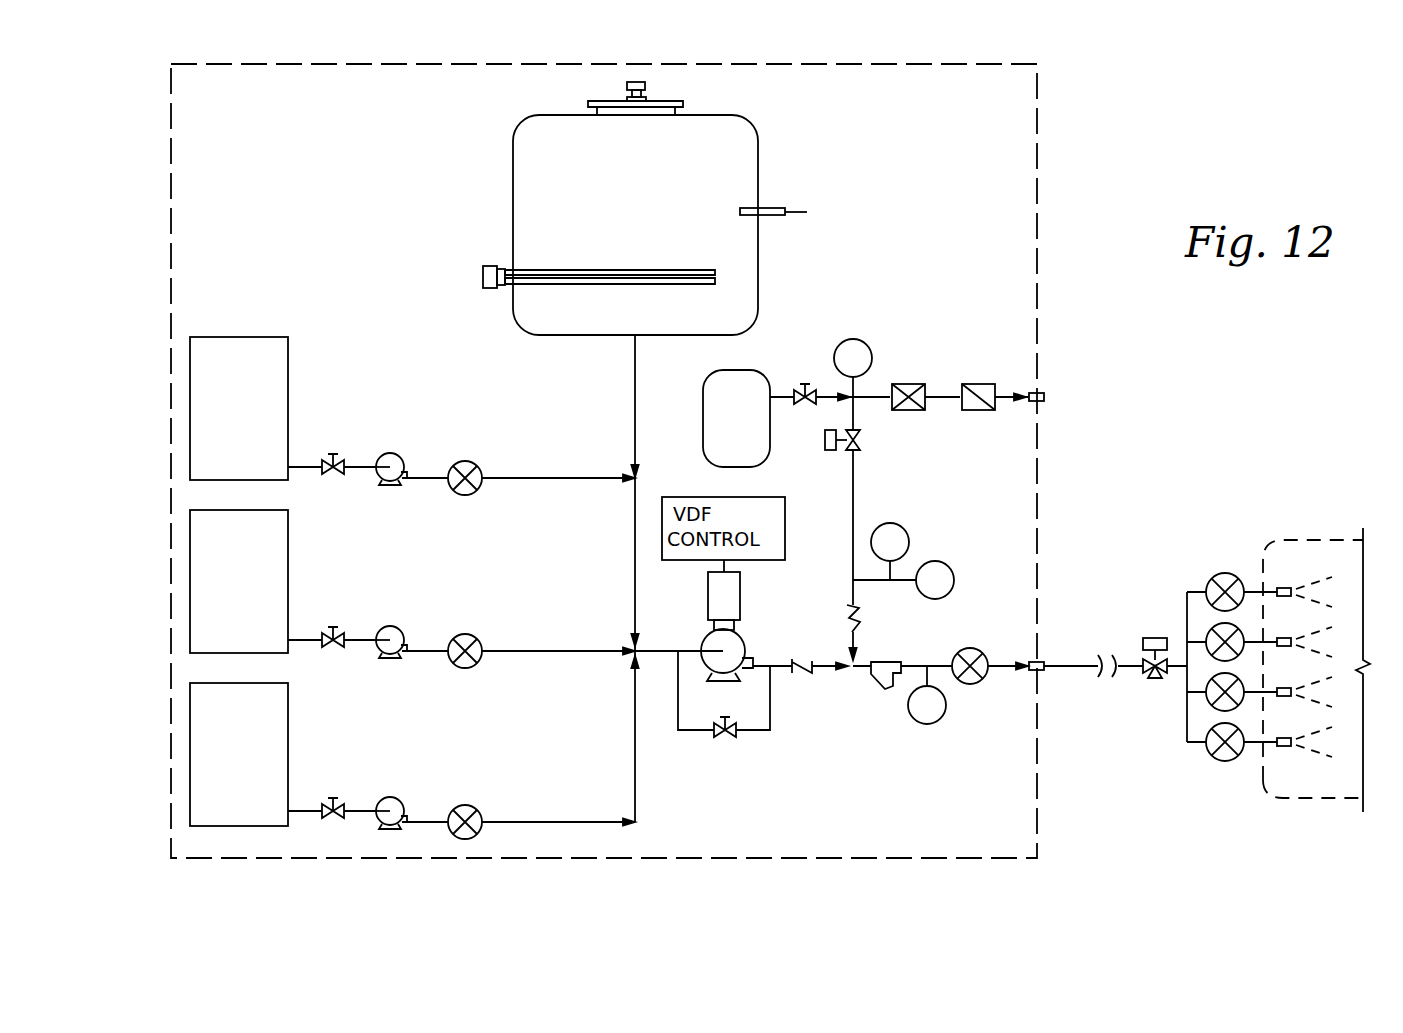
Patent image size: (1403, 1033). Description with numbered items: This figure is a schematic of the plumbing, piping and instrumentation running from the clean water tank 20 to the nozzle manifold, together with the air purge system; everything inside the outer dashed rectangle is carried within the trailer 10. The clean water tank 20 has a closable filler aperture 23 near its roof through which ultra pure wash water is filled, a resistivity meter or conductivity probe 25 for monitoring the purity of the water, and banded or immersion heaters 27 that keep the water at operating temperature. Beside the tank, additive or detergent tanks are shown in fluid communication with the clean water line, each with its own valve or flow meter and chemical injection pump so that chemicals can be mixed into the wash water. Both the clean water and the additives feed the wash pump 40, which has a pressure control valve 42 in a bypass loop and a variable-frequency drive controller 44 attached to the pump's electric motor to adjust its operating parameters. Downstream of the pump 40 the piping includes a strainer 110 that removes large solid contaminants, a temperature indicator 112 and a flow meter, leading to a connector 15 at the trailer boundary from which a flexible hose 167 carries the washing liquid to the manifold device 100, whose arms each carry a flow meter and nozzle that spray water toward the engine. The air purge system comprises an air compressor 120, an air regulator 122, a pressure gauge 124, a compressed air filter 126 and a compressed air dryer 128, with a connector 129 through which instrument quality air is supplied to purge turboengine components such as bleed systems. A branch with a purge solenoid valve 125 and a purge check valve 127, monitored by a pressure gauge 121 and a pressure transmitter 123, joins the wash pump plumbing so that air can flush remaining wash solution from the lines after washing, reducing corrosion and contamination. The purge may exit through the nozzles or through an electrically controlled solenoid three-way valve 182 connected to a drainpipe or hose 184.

The trailer 10 is at (1037, 177).
The connector 15 is at (1043, 662).
The clean water tank 20 is at (513, 189).
The closable filler aperture 23 is at (646, 87).
The conductivity probe 25 is at (781, 207).
The immersion heaters 27 is at (602, 270).
The wash pump 40 is at (740, 597).
The pressure control valve 42 is at (725, 740).
The variable-frequency drive controller 44 is at (745, 643).
The manifold device 100 is at (1180, 575).
The strainer 110 is at (885, 690).
The temperature indicator 112 is at (925, 724).
The air compressor 120 is at (713, 417).
The pressure gauge 121 is at (909, 542).
The air regulator 122 is at (805, 381).
The pressure transmitter 123 is at (954, 580).
The pressure gauge 124 is at (855, 339).
The purge solenoid valve 125 is at (862, 441).
The compressed air filter 126 is at (908, 384).
The purge check valve 127 is at (860, 627).
The compressed air dryer 128 is at (978, 384).
The connector 129 is at (1045, 396).
The flexible hose 167 is at (1067, 672).
The three-way valve 182 is at (1155, 638).
The drainpipe or hose 184 is at (1155, 680).